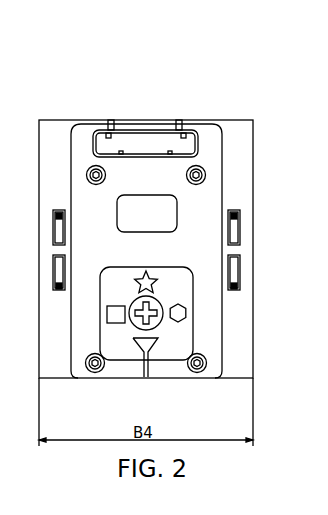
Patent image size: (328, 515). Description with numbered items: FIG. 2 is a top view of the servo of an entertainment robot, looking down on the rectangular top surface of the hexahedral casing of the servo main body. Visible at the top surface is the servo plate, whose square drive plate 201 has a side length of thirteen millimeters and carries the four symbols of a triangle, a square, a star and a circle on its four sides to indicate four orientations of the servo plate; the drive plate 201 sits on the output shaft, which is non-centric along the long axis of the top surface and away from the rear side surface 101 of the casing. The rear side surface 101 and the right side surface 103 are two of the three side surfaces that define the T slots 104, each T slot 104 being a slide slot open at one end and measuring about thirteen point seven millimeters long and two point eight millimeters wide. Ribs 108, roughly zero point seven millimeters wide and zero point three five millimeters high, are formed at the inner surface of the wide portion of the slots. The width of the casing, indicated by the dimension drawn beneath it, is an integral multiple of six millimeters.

The rear side surface 101 is at (117, 204).
The right side surface 103 is at (170, 249).
The T slot 104 is at (167, 104).
The rib 108 is at (196, 90).
The drive plate 201 is at (113, 338).